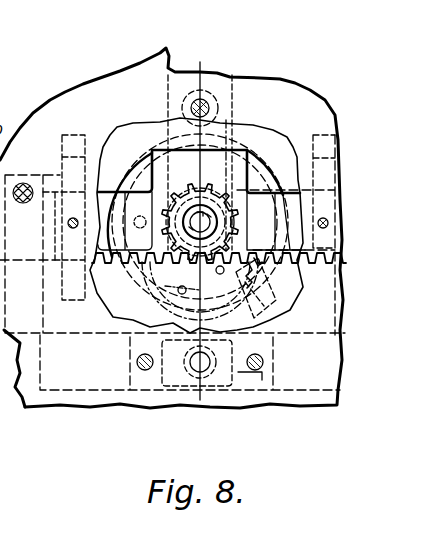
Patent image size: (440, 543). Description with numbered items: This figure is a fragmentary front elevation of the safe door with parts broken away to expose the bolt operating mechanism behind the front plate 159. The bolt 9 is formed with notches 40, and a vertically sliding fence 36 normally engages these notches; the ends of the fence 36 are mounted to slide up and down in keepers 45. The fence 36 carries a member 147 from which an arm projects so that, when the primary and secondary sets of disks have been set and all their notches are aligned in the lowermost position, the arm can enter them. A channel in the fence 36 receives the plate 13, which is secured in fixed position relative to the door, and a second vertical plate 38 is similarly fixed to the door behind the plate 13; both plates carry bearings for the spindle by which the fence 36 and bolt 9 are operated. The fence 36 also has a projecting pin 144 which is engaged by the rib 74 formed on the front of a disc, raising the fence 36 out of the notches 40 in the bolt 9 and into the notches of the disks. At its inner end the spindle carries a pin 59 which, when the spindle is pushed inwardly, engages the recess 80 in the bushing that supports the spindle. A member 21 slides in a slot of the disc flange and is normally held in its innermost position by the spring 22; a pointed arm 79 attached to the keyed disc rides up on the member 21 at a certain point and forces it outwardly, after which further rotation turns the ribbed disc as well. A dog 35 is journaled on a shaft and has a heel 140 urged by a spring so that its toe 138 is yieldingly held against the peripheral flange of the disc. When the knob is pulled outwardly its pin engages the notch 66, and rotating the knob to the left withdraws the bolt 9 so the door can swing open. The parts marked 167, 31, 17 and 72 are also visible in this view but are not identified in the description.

The front plate 159 is at (127, 63).
The bolt 9 is at (53, 313).
The pin 59 is at (0, 116).
The notches 40 is at (72, 300).
The keepers 45 is at (53, 169).
The member 147 is at (79, 131).
The screw 167 is at (75, 219).
The fence 36 is at (105, 243).
The projecting pin 144 is at (137, 232).
The rib 74 is at (172, 262).
The notch 66 is at (247, 190).
The shaft 31 is at (172, 148).
The plate 13 is at (215, 78).
The vertical plate 38 is at (222, 112).
The recess 80 is at (228, 192).
The pointed arm 79 is at (209, 165).
The rack 17 is at (240, 253).
The member 21 is at (208, 278).
The spring 22 is at (262, 250).
The dog 35 is at (262, 305).
The toe 138 is at (262, 332).
The heel 140 is at (248, 374).
The guide plate 72 is at (277, 256).